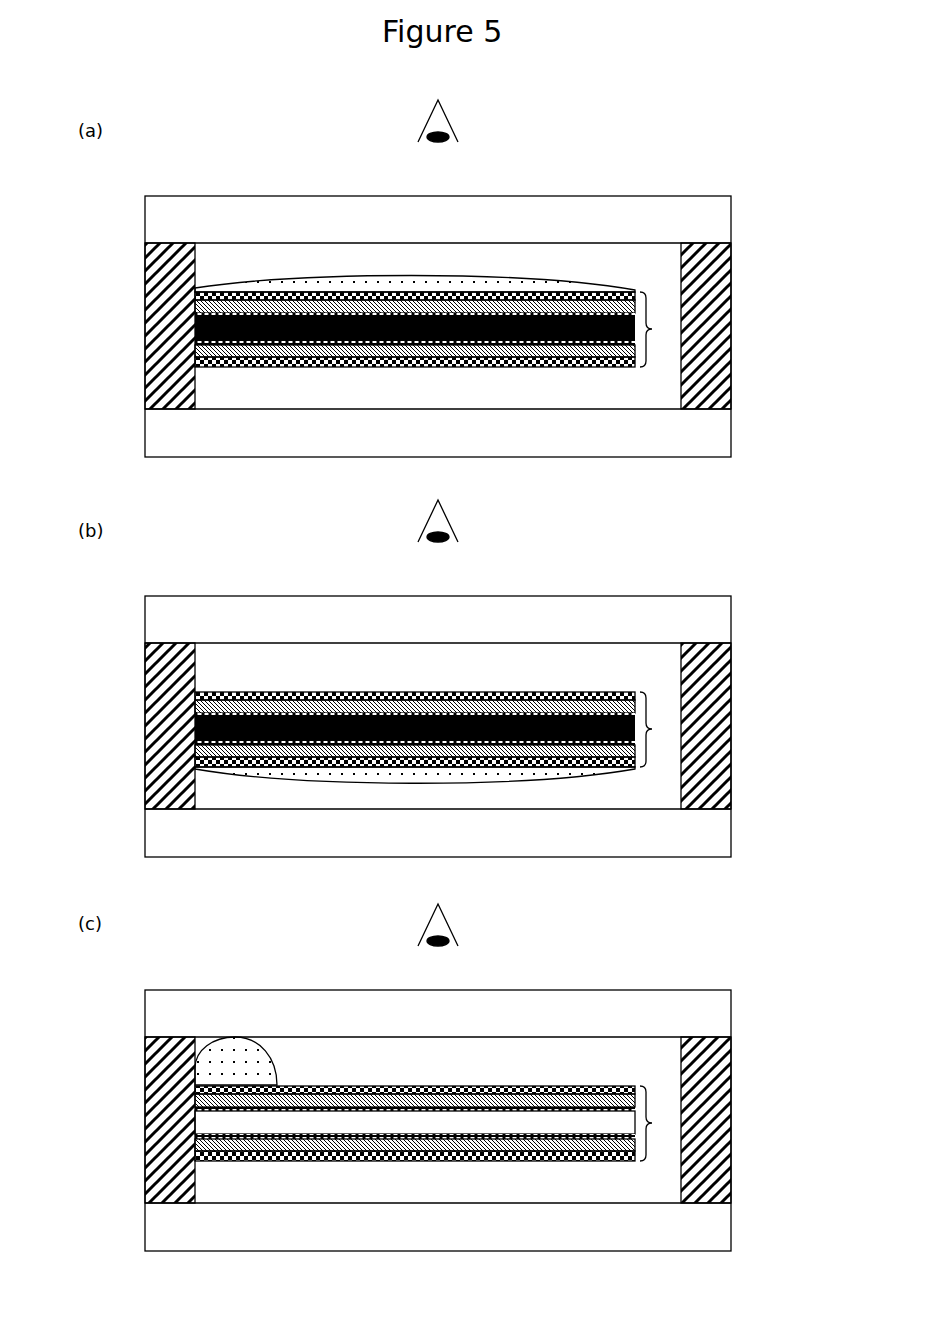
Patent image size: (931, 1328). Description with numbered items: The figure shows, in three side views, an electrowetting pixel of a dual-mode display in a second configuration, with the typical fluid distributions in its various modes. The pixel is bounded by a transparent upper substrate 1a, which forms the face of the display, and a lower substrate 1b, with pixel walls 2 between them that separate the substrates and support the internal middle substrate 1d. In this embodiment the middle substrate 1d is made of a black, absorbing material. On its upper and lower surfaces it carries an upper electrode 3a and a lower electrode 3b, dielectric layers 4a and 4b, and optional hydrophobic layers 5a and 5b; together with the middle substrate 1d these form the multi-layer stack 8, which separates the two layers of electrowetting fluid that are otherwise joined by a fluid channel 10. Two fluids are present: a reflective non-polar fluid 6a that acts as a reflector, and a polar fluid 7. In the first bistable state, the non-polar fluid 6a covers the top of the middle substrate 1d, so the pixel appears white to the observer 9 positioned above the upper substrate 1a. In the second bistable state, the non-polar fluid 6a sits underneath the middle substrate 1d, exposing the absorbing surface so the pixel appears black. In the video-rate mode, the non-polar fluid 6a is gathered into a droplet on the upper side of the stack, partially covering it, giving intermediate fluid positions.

The upper substrate 1a is at (775, 1011).
The lower substrate 1b is at (775, 1229).
The middle substrate 1d is at (202, 1122).
The pixel walls 2 is at (775, 1085).
The upper electrode 3a is at (194, 1101).
The lower electrode 3b is at (194, 1144).
The upper dielectric layer 4a is at (194, 1092).
The lower dielectric layer 4b is at (194, 1152).
The upper hydrophobic layer 5a is at (194, 1082).
The lower hydrophobic layer 5b is at (194, 1161).
The non-polar fluid 6a is at (252, 1052).
The polar fluid 7 is at (775, 1176).
The multi-layer stack 8 is at (425, 725).
The observer 9 is at (517, 925).
The fluid channel 10 is at (770, 1154).